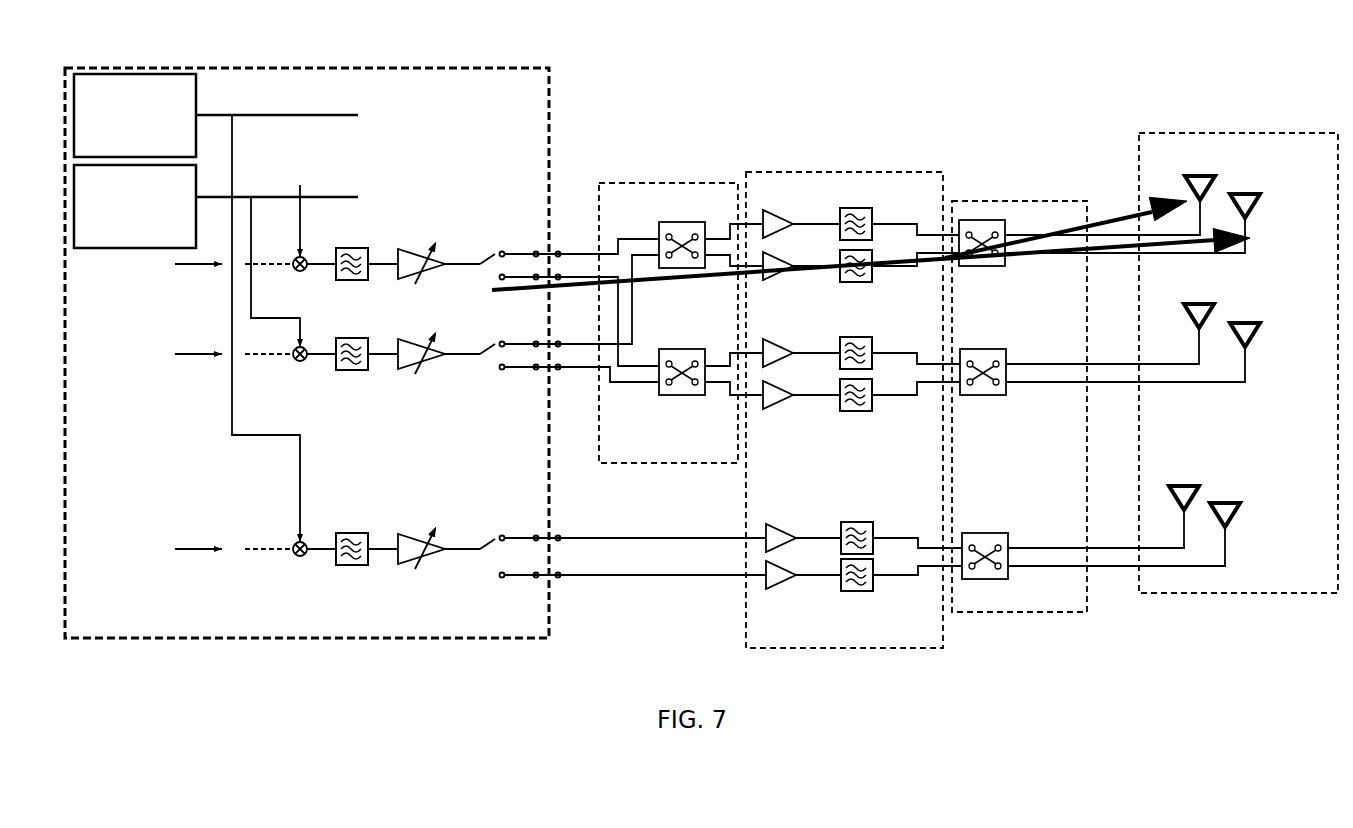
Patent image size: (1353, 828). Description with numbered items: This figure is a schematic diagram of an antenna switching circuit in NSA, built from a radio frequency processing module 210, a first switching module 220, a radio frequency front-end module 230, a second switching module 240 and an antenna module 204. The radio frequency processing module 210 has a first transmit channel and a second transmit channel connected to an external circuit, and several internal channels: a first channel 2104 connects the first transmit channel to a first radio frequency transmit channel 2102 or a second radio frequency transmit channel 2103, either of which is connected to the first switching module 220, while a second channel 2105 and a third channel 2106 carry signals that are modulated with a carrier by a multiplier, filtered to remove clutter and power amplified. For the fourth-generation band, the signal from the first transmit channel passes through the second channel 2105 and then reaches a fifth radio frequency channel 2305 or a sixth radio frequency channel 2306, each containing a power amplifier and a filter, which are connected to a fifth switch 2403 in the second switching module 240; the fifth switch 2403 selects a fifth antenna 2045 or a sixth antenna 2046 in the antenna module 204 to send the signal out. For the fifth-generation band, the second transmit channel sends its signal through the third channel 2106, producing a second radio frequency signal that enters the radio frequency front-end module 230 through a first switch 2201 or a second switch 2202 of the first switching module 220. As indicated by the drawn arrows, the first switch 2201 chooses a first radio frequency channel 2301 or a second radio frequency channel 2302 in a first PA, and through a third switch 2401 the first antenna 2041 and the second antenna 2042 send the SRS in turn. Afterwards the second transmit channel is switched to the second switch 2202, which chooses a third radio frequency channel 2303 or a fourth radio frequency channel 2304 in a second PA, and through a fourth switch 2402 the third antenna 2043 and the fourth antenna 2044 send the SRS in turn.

The radio frequency processing module 210 is at (483, 60).
The first switching module 220 is at (648, 180).
The radio frequency front-end module 230 is at (905, 172).
The second switching module 240 is at (1020, 202).
The antenna module 204 is at (1240, 133).
The first antenna 2041 is at (1210, 178).
The second antenna 2042 is at (1258, 200).
The third antenna 2043 is at (1210, 305).
The fourth antenna 2044 is at (1260, 322).
The fifth antenna 2045 is at (1195, 485).
The sixth antenna 2046 is at (1240, 503).
The first radio frequency transmit channel 2102 is at (513, 337).
The second radio frequency transmit channel 2103 is at (525, 368).
The first channel 2104 is at (287, 310).
The second channel 2105 is at (308, 488).
The third channel 2106 is at (305, 235).
The first switch 2201 is at (690, 222).
The second switch 2202 is at (690, 398).
The first radio frequency channel 2301 is at (800, 220).
The second radio frequency channel 2302 is at (810, 272).
The third radio frequency channel 2303 is at (802, 347).
The fourth radio frequency channel 2304 is at (810, 405).
The fifth radio frequency channel 2305 is at (803, 535).
The sixth radio frequency channel 2306 is at (805, 573).
The third switch 2401 is at (990, 270).
The fourth switch 2402 is at (963, 348).
The fifth switch 2403 is at (984, 531).